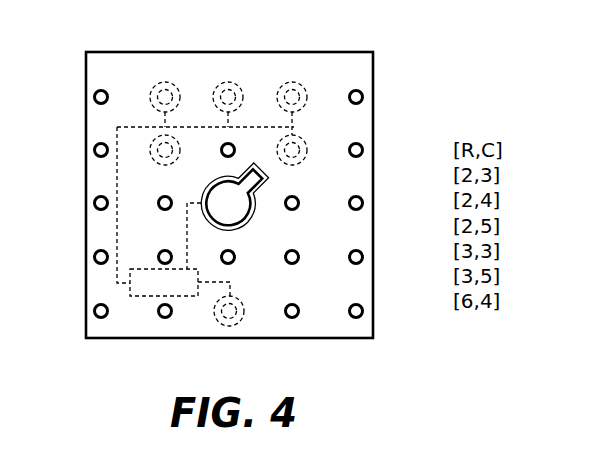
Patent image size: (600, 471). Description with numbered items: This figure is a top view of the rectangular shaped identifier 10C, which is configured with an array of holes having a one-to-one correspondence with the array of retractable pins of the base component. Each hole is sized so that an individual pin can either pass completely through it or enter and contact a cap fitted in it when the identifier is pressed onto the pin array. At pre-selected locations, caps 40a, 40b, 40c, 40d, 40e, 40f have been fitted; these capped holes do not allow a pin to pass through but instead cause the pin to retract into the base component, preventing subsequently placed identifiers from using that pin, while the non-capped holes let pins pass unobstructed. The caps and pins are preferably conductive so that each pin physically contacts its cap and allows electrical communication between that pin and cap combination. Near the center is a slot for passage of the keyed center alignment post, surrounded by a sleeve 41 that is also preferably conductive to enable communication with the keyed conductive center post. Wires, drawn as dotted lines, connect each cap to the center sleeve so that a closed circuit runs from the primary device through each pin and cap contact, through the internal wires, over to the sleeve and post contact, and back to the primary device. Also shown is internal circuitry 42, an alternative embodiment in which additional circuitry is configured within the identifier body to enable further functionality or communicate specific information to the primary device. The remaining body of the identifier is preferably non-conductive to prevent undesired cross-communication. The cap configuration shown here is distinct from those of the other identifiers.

The rectangular shaped identifier 10C is at (373, 127).
The cap 40a is at (242, 298).
The cap 40b is at (152, 159).
The cap 40c is at (148, 92).
The cap 40d is at (217, 87).
The cap 40e is at (281, 84).
The cap 40f is at (301, 137).
The sleeve 41 is at (255, 216).
The internal circuitry 42 is at (130, 292).